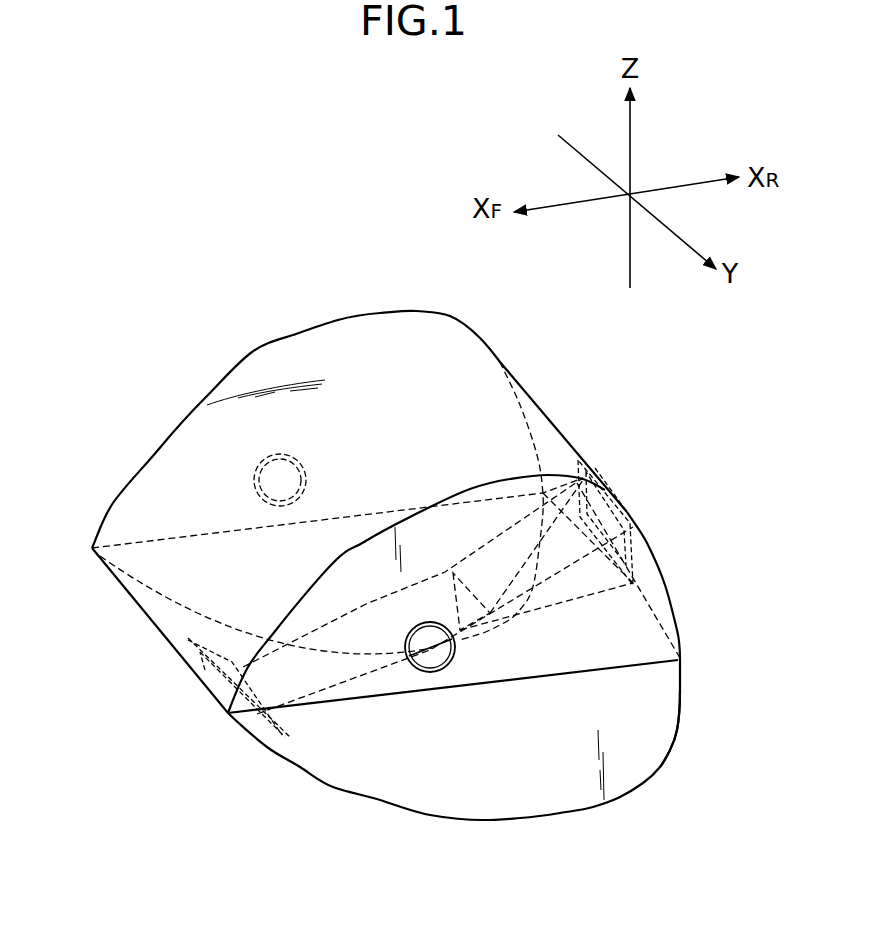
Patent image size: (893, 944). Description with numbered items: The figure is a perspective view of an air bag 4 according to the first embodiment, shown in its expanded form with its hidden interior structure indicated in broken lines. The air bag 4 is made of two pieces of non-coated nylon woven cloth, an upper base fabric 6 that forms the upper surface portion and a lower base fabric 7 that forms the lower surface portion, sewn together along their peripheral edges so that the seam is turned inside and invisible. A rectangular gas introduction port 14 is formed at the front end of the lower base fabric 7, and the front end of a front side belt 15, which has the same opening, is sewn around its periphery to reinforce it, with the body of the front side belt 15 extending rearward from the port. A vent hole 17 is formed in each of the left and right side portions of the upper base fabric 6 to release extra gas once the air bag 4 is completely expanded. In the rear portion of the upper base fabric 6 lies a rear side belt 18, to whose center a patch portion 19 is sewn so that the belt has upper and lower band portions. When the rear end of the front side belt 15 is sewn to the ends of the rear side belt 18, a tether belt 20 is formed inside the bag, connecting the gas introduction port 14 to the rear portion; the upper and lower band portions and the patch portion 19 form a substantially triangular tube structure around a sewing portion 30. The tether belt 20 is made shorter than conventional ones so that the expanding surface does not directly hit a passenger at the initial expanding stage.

The air bag 4 is at (134, 370).
The upper base fabric 6 is at (672, 603).
The lower base fabric 7 is at (673, 747).
The gas introduction port 14 is at (210, 669).
The front side belt 15 is at (354, 682).
The vent hole 17 is at (253, 490).
The rear side belt 18 is at (545, 597).
The patch portion 19 is at (625, 505).
The tether belt 20 is at (356, 598).
The sewing portion 30 is at (442, 558).